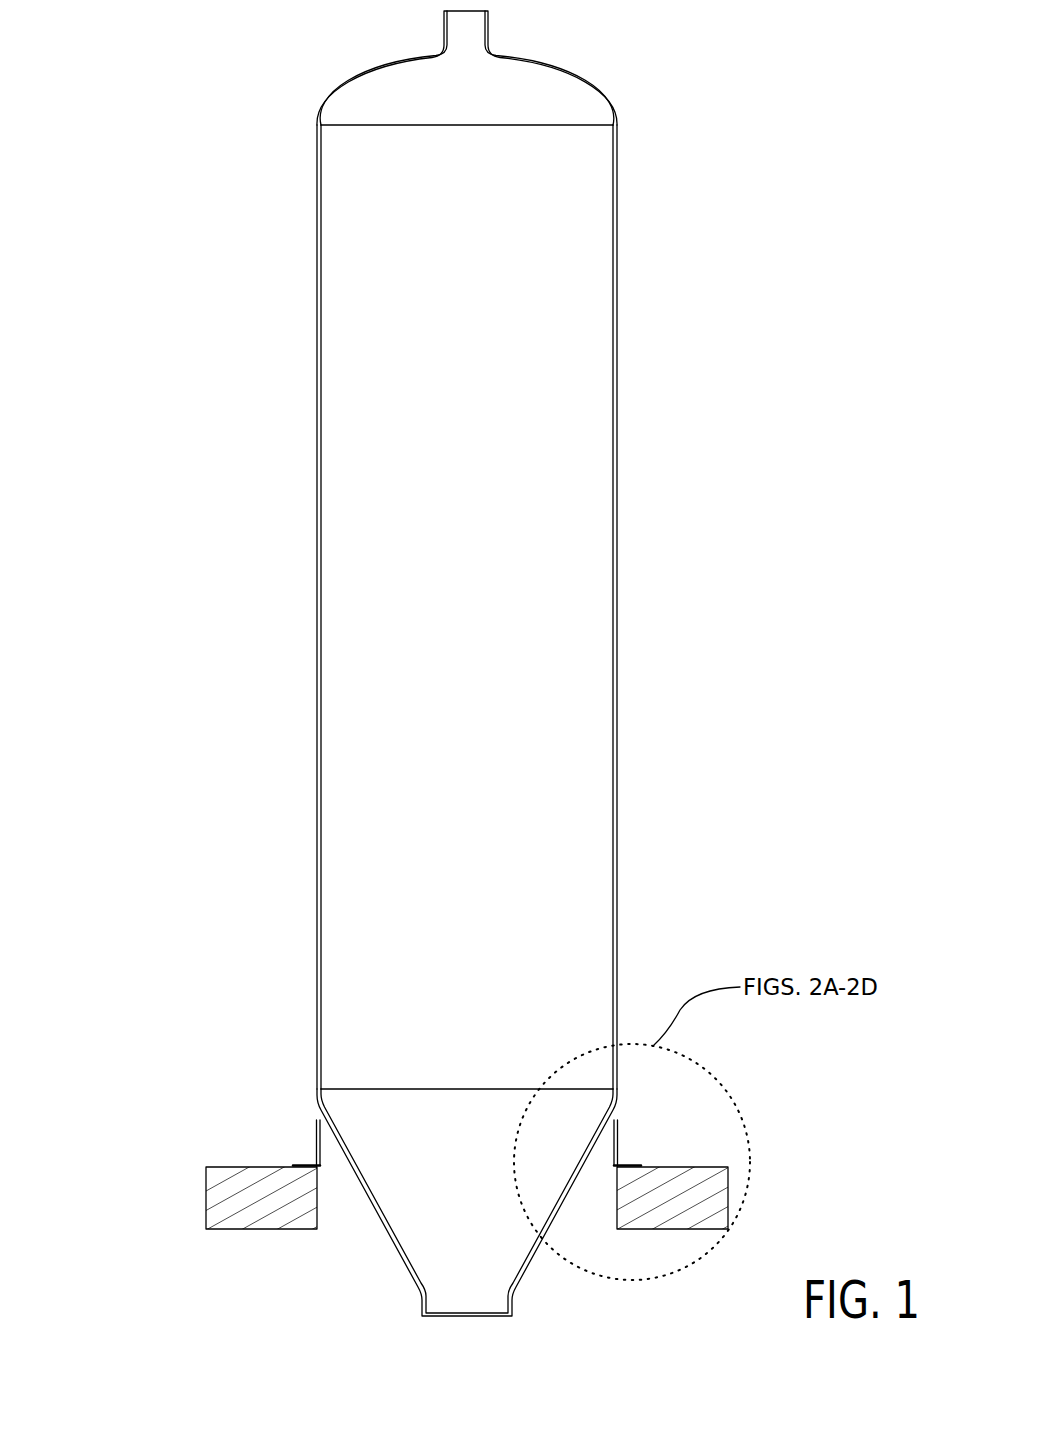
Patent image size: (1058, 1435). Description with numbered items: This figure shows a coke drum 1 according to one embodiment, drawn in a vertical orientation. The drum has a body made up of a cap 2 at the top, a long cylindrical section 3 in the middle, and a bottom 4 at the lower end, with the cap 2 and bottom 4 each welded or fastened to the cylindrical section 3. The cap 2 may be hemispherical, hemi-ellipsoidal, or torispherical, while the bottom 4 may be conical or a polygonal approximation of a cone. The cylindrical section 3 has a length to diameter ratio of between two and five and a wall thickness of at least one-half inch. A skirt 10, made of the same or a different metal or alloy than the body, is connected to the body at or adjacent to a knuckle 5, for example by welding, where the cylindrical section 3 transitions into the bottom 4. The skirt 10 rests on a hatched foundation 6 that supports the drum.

The coke drum 1 is at (96, 60).
The cap 2 is at (360, 77).
The cylindrical section 3 is at (317, 341).
The bottom 4 is at (394, 1247).
The knuckle 5 is at (318, 1089).
The foundation 6 is at (210, 1198).
The skirt 10 is at (317, 1139).